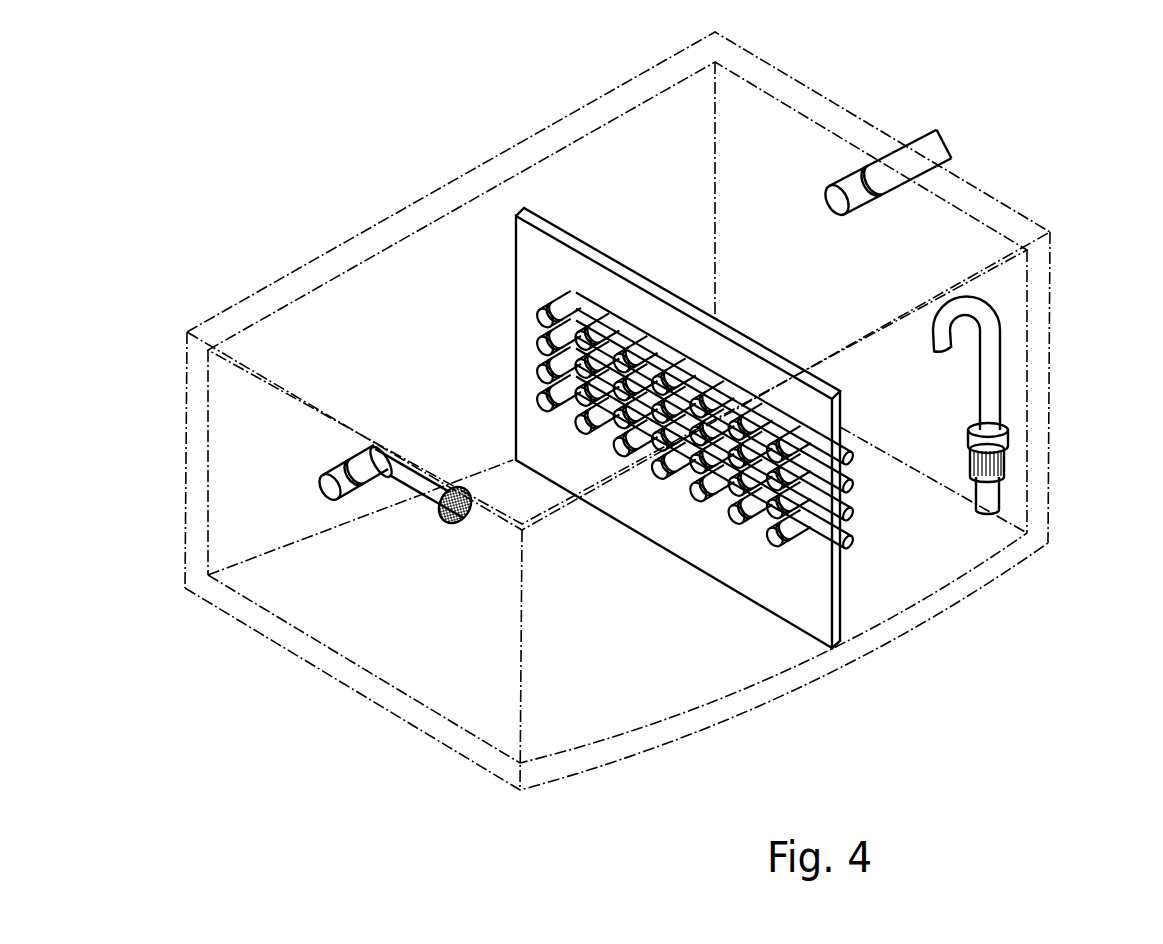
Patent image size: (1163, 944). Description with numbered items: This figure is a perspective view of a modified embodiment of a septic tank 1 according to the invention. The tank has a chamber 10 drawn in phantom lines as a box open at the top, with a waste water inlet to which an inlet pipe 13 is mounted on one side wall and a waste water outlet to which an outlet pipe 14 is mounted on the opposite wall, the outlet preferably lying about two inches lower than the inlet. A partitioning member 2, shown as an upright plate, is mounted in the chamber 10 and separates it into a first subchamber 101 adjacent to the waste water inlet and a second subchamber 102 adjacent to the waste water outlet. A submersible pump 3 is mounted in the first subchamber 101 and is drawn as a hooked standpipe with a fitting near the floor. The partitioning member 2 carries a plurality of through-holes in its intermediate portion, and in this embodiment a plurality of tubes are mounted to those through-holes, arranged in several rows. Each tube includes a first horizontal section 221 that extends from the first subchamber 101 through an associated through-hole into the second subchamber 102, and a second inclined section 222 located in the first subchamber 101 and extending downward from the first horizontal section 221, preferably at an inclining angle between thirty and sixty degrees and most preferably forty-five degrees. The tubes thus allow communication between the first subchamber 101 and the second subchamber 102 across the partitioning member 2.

The cleaning device 1 is at (625, 434).
The chamber 10 is at (403, 310).
The first subchamber 101 is at (950, 543).
The second subchamber 102 is at (657, 690).
The inlet pipe 13 is at (947, 147).
The outlet pipe 14 is at (325, 470).
The partitioning member 2 is at (818, 622).
The first horizontal section 221 is at (553, 303).
The second inclined section 222 is at (595, 313).
The submersible pump 3 is at (1003, 457).